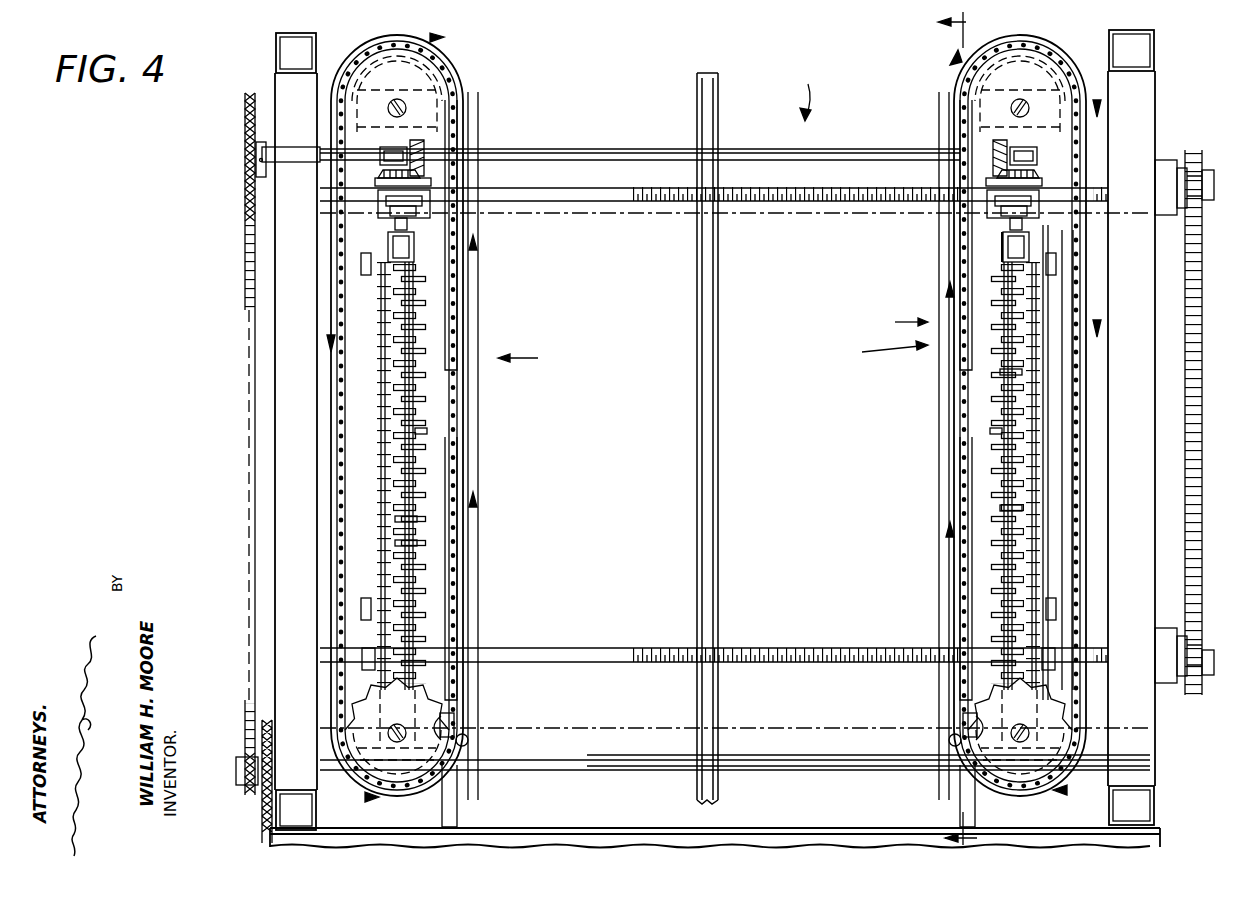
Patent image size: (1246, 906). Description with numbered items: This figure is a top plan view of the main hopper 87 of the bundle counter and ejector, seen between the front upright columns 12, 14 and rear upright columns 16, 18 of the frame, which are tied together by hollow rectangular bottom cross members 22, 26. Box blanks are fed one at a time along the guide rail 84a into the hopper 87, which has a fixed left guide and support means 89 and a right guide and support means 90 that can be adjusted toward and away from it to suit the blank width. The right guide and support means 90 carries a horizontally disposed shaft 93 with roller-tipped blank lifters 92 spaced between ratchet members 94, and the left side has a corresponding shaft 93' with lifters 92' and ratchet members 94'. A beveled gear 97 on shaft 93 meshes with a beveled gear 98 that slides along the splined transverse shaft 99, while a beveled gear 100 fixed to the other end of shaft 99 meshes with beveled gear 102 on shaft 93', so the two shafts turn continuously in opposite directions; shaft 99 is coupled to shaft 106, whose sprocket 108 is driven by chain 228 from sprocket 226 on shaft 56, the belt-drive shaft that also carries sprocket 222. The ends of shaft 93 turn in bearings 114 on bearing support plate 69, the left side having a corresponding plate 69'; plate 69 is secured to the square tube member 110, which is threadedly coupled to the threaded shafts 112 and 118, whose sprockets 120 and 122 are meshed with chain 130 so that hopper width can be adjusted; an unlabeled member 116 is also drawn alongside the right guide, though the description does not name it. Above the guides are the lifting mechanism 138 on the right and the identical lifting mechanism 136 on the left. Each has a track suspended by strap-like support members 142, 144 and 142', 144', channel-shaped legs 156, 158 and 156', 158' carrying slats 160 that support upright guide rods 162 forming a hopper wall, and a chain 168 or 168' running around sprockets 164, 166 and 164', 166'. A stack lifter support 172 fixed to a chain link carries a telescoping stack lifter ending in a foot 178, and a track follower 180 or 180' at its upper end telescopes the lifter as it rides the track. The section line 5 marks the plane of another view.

The section line 5— 5 is at (971, 430).
The front upright column 12 is at (317, 813).
The front upright column 14 is at (1155, 806).
The rear upright column 16 is at (276, 57).
The rear upright column 18 is at (1155, 52).
The bottom cross member 22 is at (1137, 454).
The bottom cross member 26 is at (306, 498).
The shaft 56 is at (819, 770).
The bearing support plate 69 is at (1061, 205).
The bearing support plate 69' is at (448, 220).
The guide rail 84a is at (713, 393).
The main hopper 87 is at (802, 93).
The left guide and support means 89 is at (486, 334).
The right guide and support means 90 is at (896, 323).
The blank lifter 92 is at (942, 441).
The blank lifter 92' is at (472, 429).
The shaft 93 is at (943, 241).
The shaft 93' is at (445, 180).
The ratchet member 94 is at (963, 400).
The ratchet member 94' is at (453, 400).
The beveled gear 97 is at (1035, 166).
The beveled gear 98 is at (968, 140).
The shaft 99 is at (877, 150).
The beveled gear 100 is at (438, 141).
The beveled gear 102 is at (378, 171).
The shaft 106 is at (321, 149).
The sprocket 108 is at (245, 123).
The square tube member 110 is at (1046, 183).
The threaded shaft 112 is at (809, 648).
The bearing 114 is at (1030, 200).
The right guide rail 116 is at (1040, 362).
The threaded shaft 118 is at (821, 202).
The sprocket 120 is at (1202, 674).
The sprocket 122 is at (1202, 180).
The chain 130 is at (1202, 491).
The lifting mechanism 136 is at (537, 359).
The lifting mechanism 138 is at (866, 352).
The support member 142 is at (1097, 264).
The support member 142' is at (320, 266).
The support member 144 is at (1097, 591).
The support member 144' is at (323, 605).
The channel-shaped leg 156 is at (1094, 639).
The channel-shaped leg 156' is at (328, 650).
The channel-shaped leg 158 is at (1075, 460).
The channel-shaped leg 158' is at (344, 244).
The slat 160 is at (430, 545).
The upright guide rod 162 is at (428, 520).
The sprocket 164 is at (1020, 726).
The sprocket 164' is at (397, 726).
The sprocket 166 is at (1035, 74).
The sprocket 166' is at (436, 87).
The chain 168 is at (1049, 415).
The chain 168' is at (434, 417).
The stack lifter support 172 is at (466, 740).
The foot 178 is at (452, 725).
The track follower 180 is at (931, 707).
The track follower 180' is at (490, 707).
The sprocket 222 is at (265, 796).
The sprocket 226 is at (250, 758).
The chain 228 is at (249, 502).